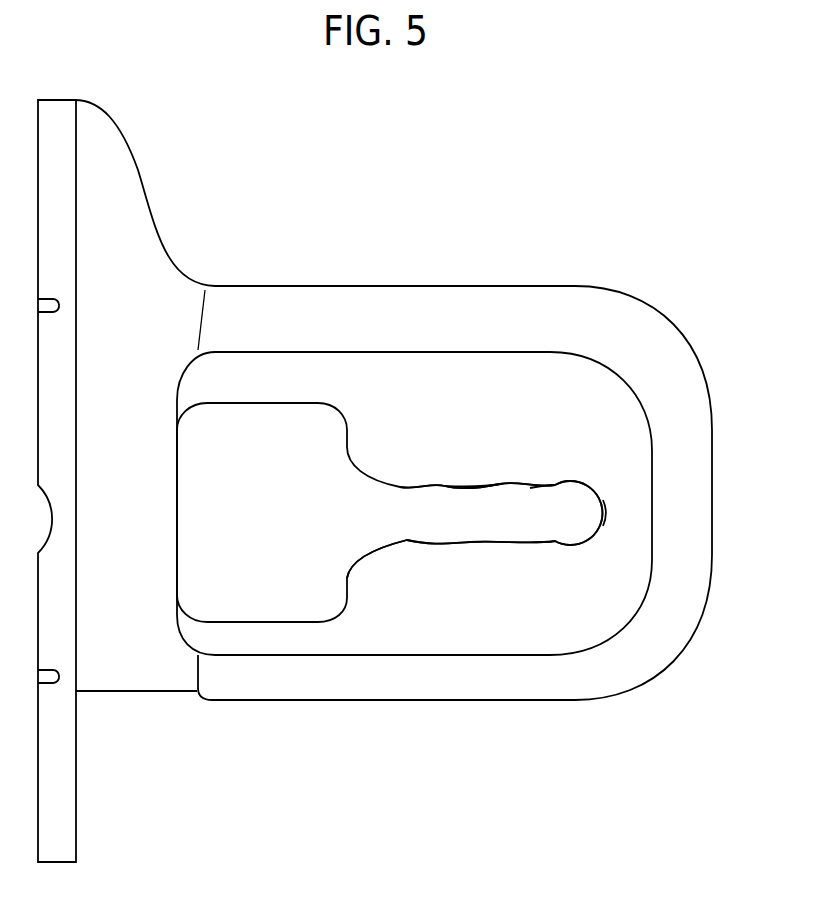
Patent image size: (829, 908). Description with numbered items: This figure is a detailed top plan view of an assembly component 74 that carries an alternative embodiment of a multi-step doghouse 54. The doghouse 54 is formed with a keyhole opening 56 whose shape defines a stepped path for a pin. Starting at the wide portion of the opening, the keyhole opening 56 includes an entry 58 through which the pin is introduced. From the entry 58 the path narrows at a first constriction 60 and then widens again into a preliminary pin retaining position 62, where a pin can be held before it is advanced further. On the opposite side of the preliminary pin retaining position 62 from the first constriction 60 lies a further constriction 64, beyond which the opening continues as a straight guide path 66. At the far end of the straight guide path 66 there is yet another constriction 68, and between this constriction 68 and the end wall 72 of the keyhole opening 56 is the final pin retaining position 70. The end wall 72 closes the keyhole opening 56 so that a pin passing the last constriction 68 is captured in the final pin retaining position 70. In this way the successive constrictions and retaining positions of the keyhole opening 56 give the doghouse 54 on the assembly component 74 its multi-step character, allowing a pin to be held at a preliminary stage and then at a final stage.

The multi-step doghouse 54 is at (580, 215).
The keyhole opening 56 is at (263, 543).
The entry 58 is at (370, 553).
The first constriction 60 is at (410, 540).
The preliminary pin retaining position 62 is at (434, 512).
The constriction 64 is at (462, 540).
The straight guide path 66 is at (498, 507).
The constriction 68 is at (550, 486).
The final pin retaining position 70 is at (575, 525).
The end wall 72 is at (604, 513).
The assembly component 74 is at (55, 113).